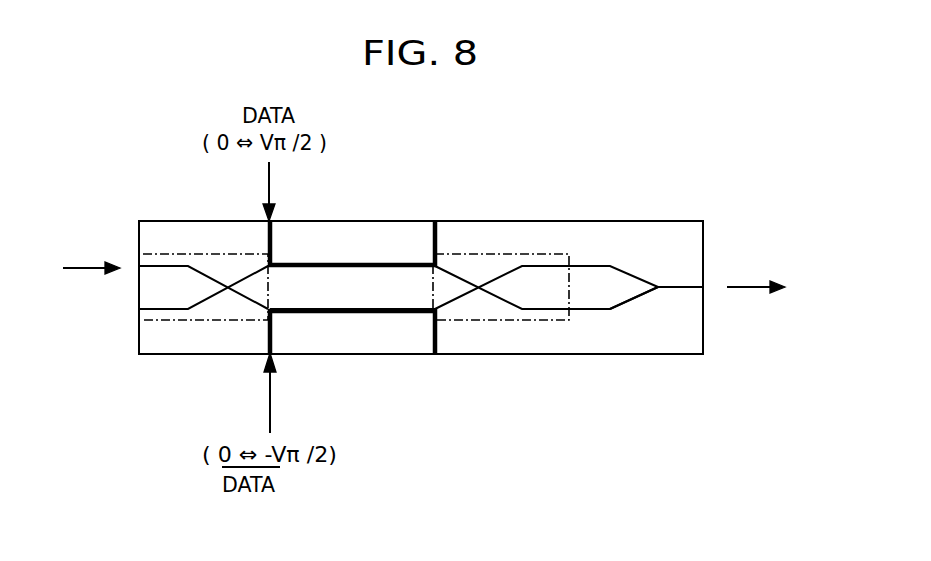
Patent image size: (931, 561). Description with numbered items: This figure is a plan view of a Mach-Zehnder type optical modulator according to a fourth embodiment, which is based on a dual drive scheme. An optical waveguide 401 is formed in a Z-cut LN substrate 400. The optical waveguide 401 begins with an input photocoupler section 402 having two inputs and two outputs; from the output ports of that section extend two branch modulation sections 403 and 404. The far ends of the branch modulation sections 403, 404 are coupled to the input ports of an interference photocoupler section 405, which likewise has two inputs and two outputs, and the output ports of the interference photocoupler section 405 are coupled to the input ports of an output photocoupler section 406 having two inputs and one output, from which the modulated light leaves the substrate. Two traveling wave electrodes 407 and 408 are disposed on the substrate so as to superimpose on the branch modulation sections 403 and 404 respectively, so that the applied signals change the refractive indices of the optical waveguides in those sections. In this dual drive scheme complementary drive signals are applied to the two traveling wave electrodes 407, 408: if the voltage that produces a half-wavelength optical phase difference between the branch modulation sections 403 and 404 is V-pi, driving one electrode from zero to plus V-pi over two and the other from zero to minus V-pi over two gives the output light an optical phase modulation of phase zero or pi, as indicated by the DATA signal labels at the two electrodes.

The Z-cut LN substrate 400 is at (476, 221).
The optical waveguide 401 is at (638, 312).
The input photocoupler section 402 is at (177, 253).
The branch modulation section 403 is at (358, 263).
The branch modulation section 404 is at (397, 312).
The interference photocoupler section 405 is at (485, 320).
The output photocoupler section 406 is at (680, 285).
The traveling wave electrode 407 is at (306, 263).
The traveling wave electrode 408 is at (307, 312).